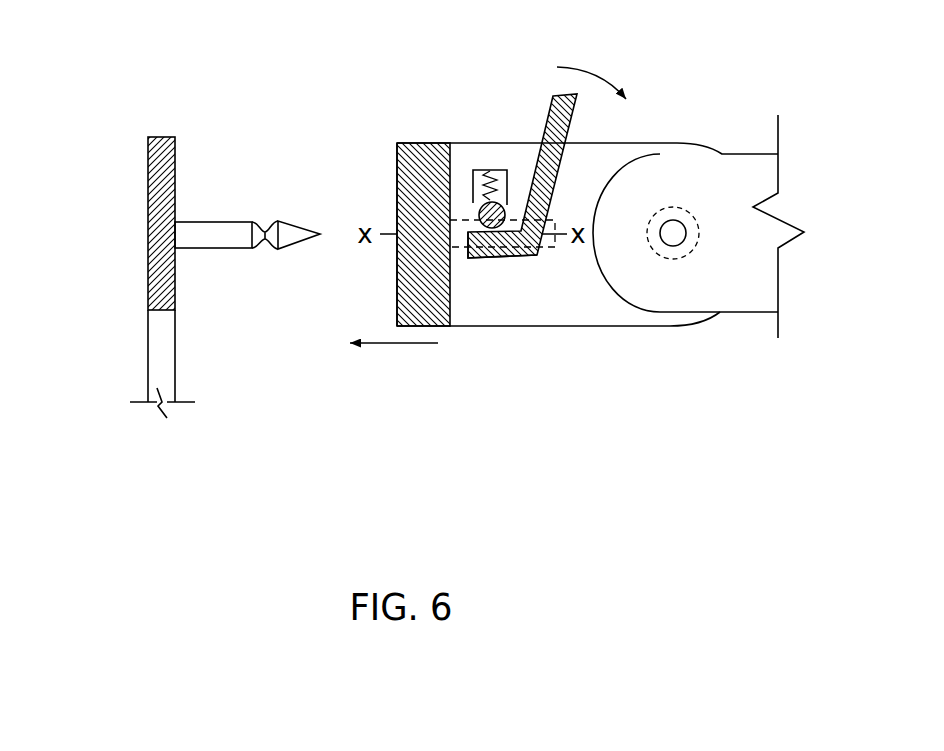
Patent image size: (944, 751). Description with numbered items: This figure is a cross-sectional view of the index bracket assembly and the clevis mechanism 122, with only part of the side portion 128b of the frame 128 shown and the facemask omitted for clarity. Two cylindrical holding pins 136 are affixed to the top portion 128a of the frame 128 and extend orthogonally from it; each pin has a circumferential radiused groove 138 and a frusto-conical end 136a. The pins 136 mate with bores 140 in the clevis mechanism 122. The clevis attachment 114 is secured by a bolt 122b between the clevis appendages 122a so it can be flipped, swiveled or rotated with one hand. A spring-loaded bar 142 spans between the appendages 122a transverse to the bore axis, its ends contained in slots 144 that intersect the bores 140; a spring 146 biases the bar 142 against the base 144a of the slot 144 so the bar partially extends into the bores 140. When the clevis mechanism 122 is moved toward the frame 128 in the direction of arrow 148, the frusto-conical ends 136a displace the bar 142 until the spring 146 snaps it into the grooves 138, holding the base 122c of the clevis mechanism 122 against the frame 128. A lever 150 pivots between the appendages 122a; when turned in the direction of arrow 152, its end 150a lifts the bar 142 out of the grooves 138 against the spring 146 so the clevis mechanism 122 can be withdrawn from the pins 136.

The clevis attachment 114 is at (735, 154).
The clevis mechanism 122 is at (537, 230).
The clevis appendages 122a is at (623, 326).
The bolt 122b is at (673, 245).
The base of clevis mechanism 122c is at (397, 268).
The frame 128 is at (103, 251).
The top portion of frame 128a is at (148, 240).
The side portion of frame 128b is at (148, 352).
The holding pins 136 is at (231, 268).
The frusto-conical end 136a is at (298, 226).
The circumferential radiused groove 138 is at (260, 244).
The bore 140 is at (550, 247).
The spring-loaded bar 142 is at (397, 157).
The slot 144 is at (414, 150).
The base of slot 144a is at (477, 210).
The spring 146 is at (483, 207).
The arrow 148 is at (378, 343).
The lever 150 is at (520, 237).
The end of lever 150a is at (495, 258).
The arrow 152 is at (587, 75).